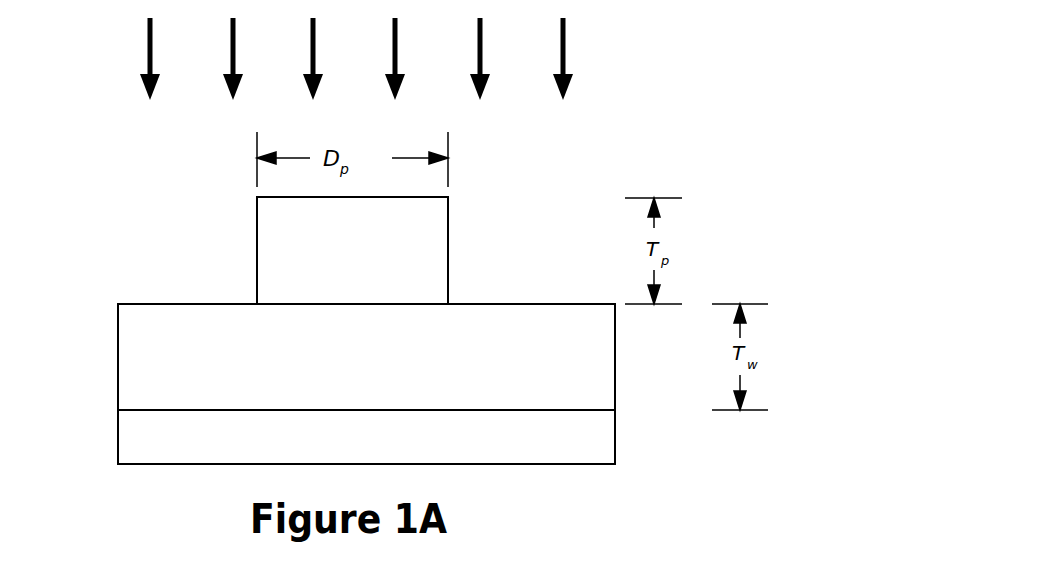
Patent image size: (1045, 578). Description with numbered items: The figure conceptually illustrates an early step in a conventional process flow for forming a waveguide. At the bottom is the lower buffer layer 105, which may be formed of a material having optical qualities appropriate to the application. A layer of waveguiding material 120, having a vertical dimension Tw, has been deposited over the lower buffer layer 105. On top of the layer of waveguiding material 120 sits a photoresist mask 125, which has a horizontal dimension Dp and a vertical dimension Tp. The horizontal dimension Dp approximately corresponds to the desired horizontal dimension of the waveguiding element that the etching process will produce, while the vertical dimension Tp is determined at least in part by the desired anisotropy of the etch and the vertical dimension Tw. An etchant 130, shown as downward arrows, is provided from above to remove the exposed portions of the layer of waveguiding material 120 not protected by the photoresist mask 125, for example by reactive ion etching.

The lower buffer layer 105 is at (369, 453).
The layer of waveguiding material 120 is at (369, 374).
The photoresist mask 125 is at (369, 265).
The etchant 130 is at (600, 52).